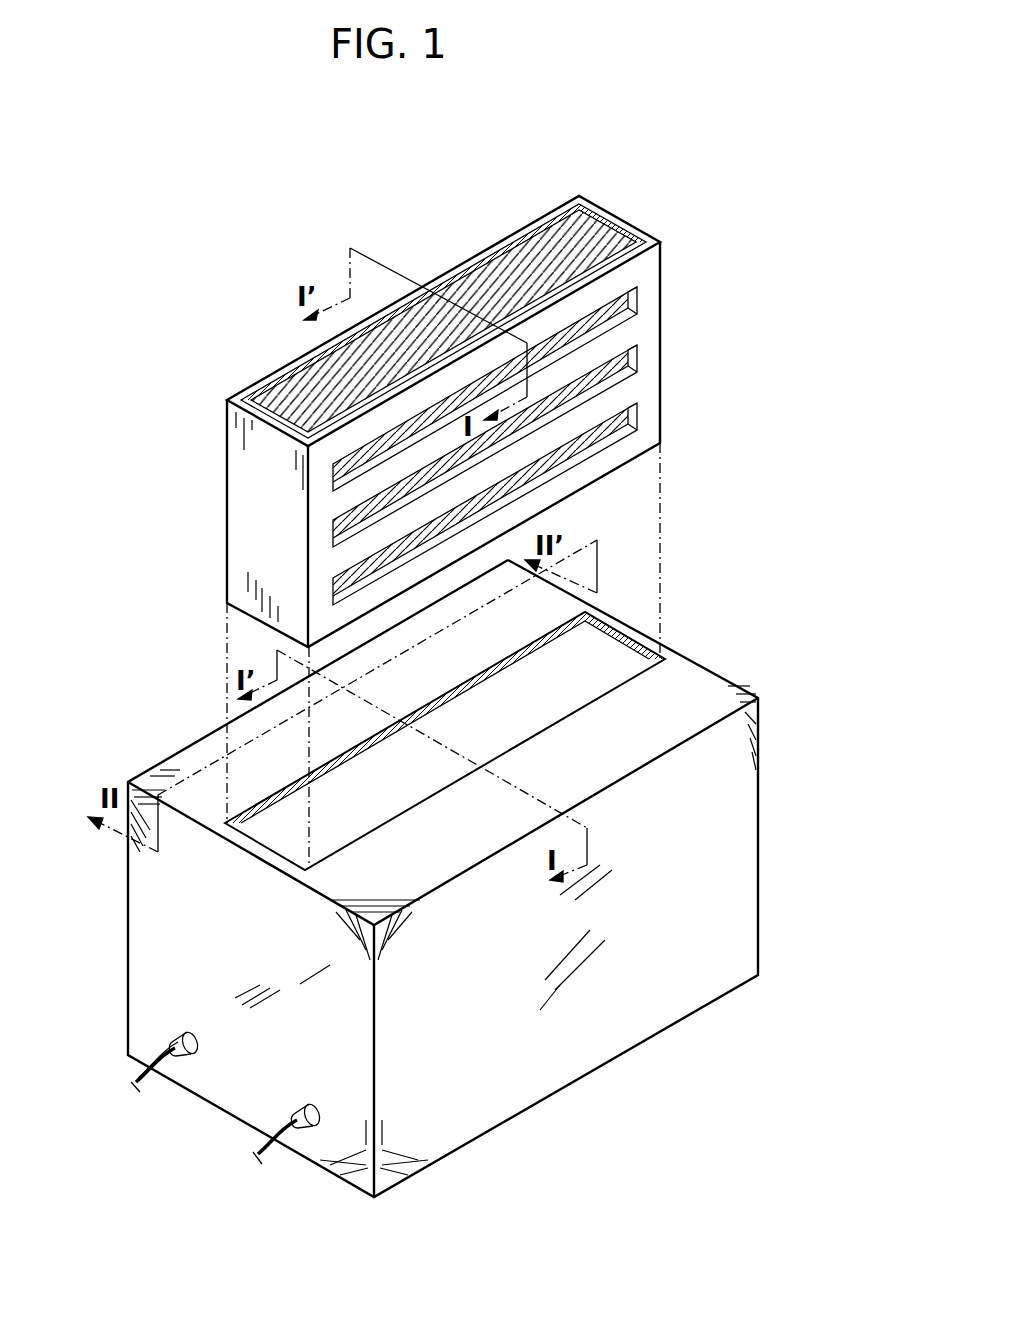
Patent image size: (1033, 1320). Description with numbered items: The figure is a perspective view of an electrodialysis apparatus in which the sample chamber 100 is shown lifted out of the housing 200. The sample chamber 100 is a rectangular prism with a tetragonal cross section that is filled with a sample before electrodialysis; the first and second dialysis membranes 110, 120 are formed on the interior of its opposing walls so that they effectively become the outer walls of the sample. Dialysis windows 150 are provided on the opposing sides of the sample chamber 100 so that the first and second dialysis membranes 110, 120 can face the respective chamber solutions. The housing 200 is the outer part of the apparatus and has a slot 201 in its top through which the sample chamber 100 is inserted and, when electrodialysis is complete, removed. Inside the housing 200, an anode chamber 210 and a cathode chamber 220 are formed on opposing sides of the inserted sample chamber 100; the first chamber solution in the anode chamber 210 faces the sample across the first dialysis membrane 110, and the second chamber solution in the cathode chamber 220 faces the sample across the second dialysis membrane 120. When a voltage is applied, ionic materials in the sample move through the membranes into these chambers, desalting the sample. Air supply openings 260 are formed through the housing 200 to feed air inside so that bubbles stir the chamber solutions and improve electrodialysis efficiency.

The sample chamber 100 is at (493, 390).
The first dialysis membrane 110 is at (562, 215).
The second dialysis membrane 120 is at (628, 240).
The dialysis windows 150 is at (637, 357).
The housing 200 is at (471, 866).
The slot 201 is at (598, 660).
The anode chamber 210 is at (215, 783).
The cathode chamber 220 is at (670, 736).
The air supply openings 260 is at (185, 1033).